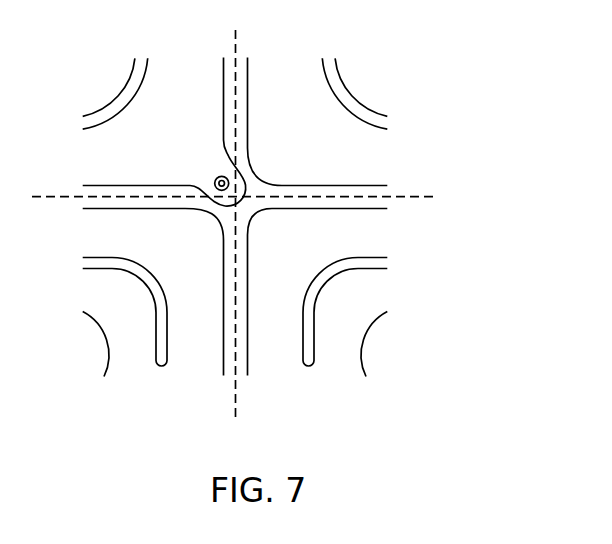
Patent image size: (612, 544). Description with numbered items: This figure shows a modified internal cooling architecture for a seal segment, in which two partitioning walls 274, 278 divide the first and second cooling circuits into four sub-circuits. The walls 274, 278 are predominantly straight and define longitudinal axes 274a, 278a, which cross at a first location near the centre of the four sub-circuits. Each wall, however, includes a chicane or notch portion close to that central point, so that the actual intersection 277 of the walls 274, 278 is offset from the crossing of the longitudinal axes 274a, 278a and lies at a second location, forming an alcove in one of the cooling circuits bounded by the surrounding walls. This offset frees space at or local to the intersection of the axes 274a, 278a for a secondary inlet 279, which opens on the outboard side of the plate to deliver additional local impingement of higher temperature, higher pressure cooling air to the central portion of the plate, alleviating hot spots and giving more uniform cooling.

The wall 274 is at (224, 344).
The longitudinal axis 274a is at (237, 402).
The intersection 277 is at (273, 161).
The wall 278 is at (364, 192).
The longitudinal axis 278a is at (405, 198).
The secondary inlet 279 is at (214, 177).